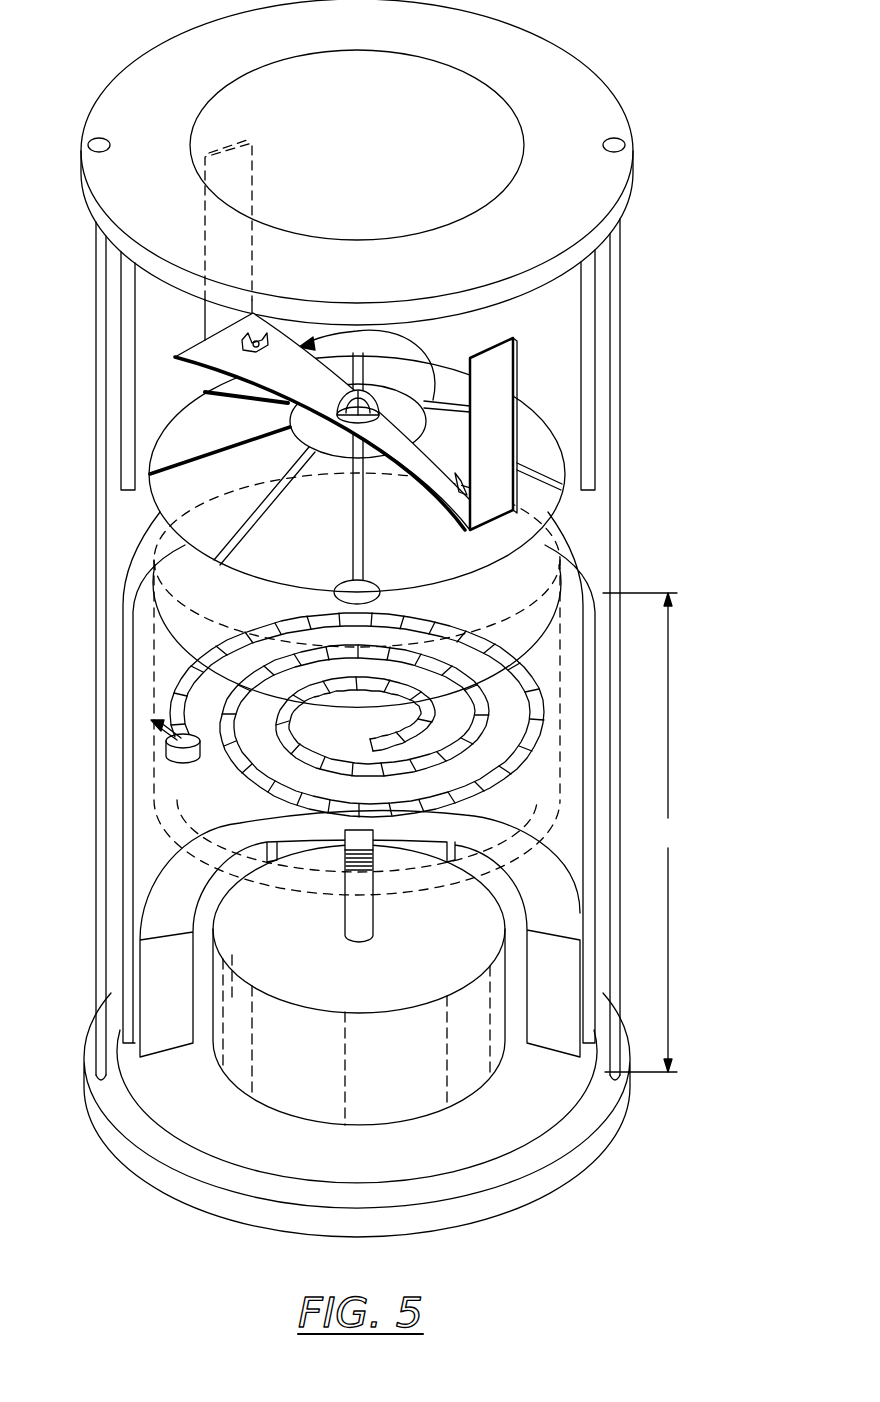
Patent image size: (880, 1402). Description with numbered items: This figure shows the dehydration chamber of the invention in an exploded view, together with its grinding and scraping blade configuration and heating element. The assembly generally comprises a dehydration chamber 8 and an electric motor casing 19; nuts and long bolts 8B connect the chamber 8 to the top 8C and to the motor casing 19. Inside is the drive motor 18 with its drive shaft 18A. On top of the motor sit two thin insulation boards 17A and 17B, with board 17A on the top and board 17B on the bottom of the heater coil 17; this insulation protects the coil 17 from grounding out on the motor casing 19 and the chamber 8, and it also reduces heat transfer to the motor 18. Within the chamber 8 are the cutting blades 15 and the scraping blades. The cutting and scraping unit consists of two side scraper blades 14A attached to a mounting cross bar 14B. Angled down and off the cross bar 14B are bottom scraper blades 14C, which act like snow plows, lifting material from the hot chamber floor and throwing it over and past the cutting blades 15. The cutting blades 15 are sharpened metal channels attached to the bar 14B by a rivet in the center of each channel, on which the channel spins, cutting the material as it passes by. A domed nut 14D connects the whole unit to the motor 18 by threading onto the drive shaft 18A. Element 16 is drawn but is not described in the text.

The dehydration chamber 8 is at (722, 110).
The nuts and long bolts 8B is at (90, 137).
The top 8C is at (572, 207).
The side scraper blades 14A is at (203, 318).
The mounting cross bar 14B is at (205, 373).
The bottom scraper blades 14C is at (195, 470).
The domed nut 14D is at (337, 402).
The cutting blades 15 is at (242, 348).
The coil terminal 16 is at (165, 752).
The heater coil 17 is at (168, 686).
The insulation board 17A is at (506, 619).
The insulation board 17B is at (553, 722).
The drive motor 18 is at (396, 1097).
The drive shaft 18A is at (378, 912).
The electric motor casing 19 is at (641, 832).